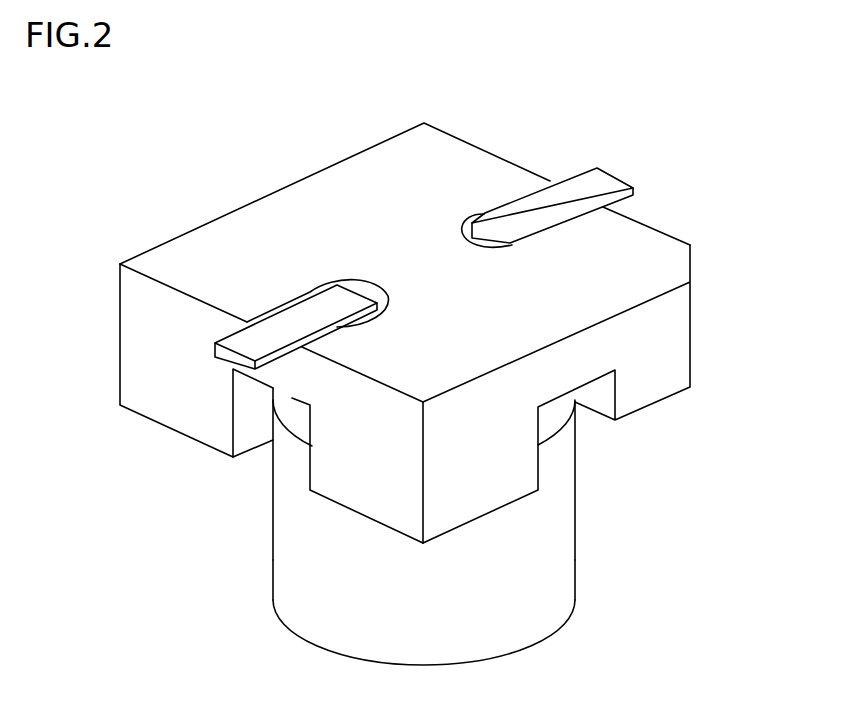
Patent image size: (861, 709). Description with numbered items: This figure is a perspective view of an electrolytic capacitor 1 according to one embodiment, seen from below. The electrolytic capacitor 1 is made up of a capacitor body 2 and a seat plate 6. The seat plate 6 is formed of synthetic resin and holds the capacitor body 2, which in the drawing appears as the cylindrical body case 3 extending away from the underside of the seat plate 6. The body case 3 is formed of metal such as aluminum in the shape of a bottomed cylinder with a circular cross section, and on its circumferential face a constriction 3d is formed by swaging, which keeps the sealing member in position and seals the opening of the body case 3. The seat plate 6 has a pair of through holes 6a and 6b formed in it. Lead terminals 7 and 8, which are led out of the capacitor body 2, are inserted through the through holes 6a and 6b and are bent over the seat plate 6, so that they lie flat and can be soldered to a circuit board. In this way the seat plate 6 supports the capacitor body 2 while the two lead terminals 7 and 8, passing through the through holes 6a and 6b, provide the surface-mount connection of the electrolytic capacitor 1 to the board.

The electrolytic capacitor 1 is at (490, 117).
The capacitor body 2 is at (563, 538).
The body case 3 is at (568, 595).
The constriction 3d is at (287, 418).
The seat plate 6 is at (690, 352).
The through hole 6a is at (360, 282).
The through hole 6b is at (467, 216).
The lead terminal 7 is at (300, 311).
The lead terminal 8 is at (588, 178).